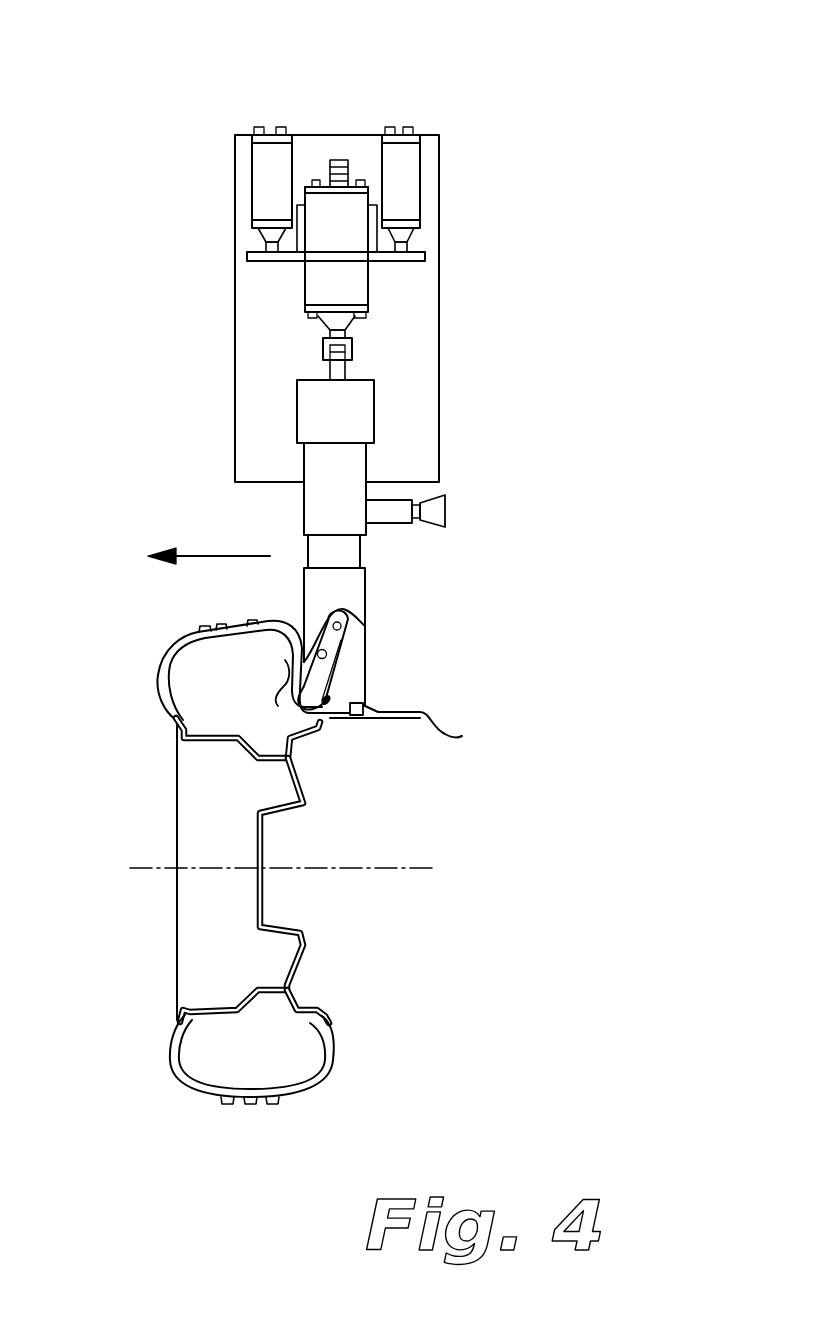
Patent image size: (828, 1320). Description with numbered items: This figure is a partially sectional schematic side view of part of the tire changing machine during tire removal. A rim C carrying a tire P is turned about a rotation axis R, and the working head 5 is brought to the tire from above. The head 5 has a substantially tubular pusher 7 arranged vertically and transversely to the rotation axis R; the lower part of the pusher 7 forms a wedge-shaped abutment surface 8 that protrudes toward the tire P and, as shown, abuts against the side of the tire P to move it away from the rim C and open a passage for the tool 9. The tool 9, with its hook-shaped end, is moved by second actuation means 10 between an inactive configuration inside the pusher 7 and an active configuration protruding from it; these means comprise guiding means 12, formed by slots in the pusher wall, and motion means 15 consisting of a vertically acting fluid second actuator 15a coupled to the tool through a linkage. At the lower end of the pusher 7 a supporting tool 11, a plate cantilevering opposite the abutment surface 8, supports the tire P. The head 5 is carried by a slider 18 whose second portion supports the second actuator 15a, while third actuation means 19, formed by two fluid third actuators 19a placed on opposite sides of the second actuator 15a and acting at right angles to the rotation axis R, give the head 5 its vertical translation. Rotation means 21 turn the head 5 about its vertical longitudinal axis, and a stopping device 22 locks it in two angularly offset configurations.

The working head 5 is at (432, 604).
The pusher 7 is at (350, 595).
The abutment surface 8 is at (292, 672).
The tool 9 is at (331, 703).
The second actuation means 10 is at (388, 288).
The supporting tool 11 is at (422, 731).
The guiding means 12 is at (340, 678).
The motion means 15 is at (362, 140).
The second actuator 15a is at (320, 195).
The slider 18 is at (430, 357).
The third actuation means 19 is at (430, 186).
The third actuator 19a is at (263, 170).
The rotation means 21 is at (390, 422).
The stopping device 22 is at (455, 493).
The rim C is at (297, 953).
The tire P is at (330, 1066).
The rotation axis R is at (390, 868).